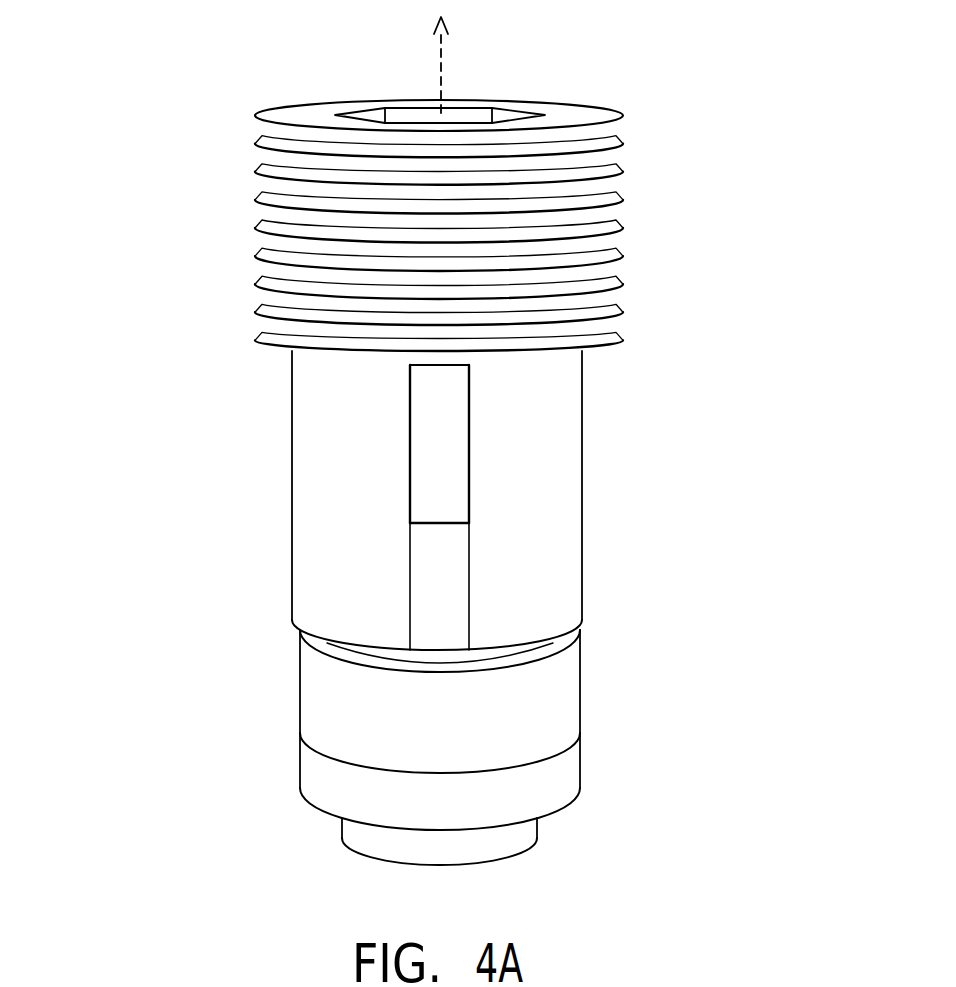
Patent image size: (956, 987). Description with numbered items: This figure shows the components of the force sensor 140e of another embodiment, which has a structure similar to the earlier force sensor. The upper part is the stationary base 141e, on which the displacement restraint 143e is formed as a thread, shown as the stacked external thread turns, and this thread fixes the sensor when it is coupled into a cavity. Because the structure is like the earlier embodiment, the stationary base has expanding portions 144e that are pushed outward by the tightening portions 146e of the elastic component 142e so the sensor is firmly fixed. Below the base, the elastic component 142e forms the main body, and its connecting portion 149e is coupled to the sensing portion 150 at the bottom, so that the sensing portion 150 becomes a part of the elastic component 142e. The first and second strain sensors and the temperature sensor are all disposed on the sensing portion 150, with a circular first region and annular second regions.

The force sensor 140e is at (742, 857).
The stationary base 141e is at (243, 164).
The displacement restraint 143e is at (283, 271).
The main body 144e is at (567, 474).
The slot 146e is at (425, 442).
The elastic component 142e is at (443, 640).
The connecting portion 149e is at (313, 703).
The sensing portion 150 is at (547, 780).